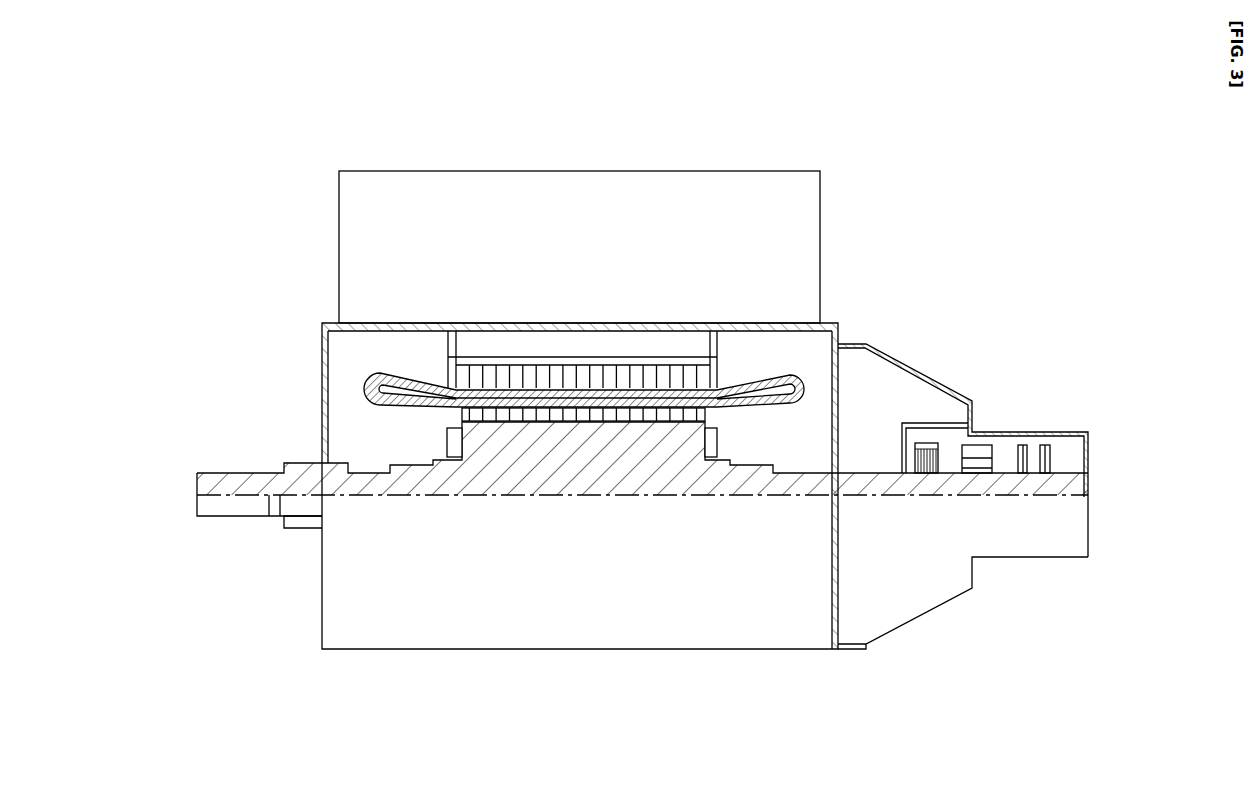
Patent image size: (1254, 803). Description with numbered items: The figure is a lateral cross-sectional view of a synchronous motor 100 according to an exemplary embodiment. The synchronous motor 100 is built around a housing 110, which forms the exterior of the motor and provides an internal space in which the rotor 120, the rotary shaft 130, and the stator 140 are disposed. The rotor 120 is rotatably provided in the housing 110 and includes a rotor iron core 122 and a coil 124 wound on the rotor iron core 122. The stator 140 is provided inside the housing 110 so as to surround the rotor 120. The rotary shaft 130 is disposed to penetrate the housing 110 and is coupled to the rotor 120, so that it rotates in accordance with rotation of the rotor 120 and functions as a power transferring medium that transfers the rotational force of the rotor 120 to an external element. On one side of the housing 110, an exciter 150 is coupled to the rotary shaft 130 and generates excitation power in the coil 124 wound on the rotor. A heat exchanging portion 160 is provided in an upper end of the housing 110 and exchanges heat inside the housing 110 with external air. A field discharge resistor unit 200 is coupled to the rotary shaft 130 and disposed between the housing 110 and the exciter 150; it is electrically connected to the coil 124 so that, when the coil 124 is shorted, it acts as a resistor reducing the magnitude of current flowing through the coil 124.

The synchronous motor 100 is at (726, 131).
The housing 110 is at (838, 337).
The rotor 120 is at (642, 407).
The rotor iron core 122 is at (718, 413).
The coil 124 is at (712, 445).
The rotary shaft 130 is at (891, 483).
The stator 140 is at (713, 377).
The exciter 150 is at (982, 460).
The heat exchanging portion 160 is at (820, 200).
The field discharge resistor unit 200 is at (927, 445).